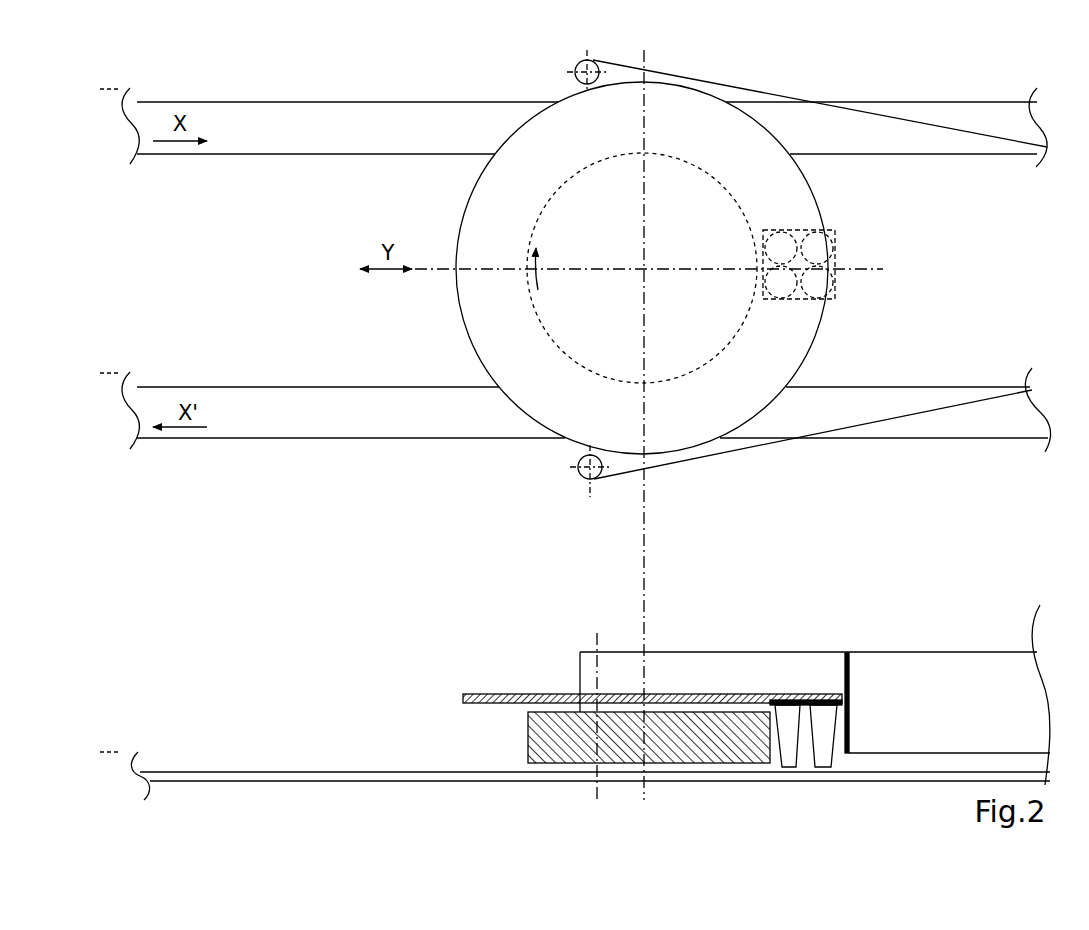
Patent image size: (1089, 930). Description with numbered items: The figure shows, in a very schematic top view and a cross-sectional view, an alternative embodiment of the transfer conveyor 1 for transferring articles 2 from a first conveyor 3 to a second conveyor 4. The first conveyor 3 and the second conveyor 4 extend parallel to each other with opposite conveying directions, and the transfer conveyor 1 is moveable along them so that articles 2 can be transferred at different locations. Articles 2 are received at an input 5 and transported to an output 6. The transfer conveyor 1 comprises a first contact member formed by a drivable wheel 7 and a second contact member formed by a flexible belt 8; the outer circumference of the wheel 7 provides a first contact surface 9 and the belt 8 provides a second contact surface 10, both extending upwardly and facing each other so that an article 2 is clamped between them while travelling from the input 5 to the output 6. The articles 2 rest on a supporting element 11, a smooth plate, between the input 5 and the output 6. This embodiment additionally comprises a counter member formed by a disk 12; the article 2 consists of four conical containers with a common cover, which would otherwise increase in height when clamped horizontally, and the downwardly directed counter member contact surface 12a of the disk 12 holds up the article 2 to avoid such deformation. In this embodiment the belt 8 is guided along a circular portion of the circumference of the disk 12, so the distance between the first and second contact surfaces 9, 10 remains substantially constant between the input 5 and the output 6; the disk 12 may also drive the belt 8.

The transfer conveyor 1 is at (952, 217).
The article 2 is at (817, 243).
The first conveyor 3 is at (216, 142).
The second conveyor 4 is at (214, 397).
The input 5 is at (598, 105).
The output 6 is at (673, 420).
The drivable wheel 7 is at (555, 212).
The flexible belt 8 is at (777, 442).
The first contact surface 9 is at (528, 233).
The second contact surface 10 is at (818, 214).
The supporting element 11 is at (883, 763).
The disk 12 is at (728, 693).
The counter member contact surface 12a is at (800, 706).